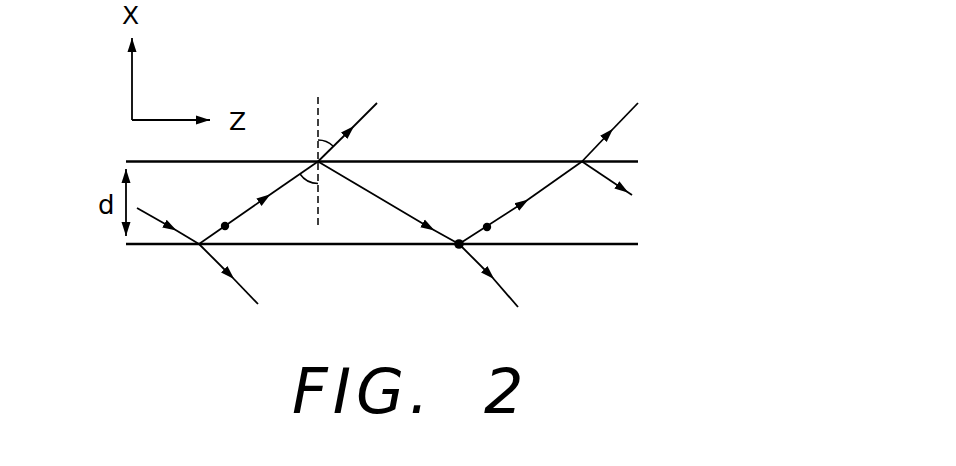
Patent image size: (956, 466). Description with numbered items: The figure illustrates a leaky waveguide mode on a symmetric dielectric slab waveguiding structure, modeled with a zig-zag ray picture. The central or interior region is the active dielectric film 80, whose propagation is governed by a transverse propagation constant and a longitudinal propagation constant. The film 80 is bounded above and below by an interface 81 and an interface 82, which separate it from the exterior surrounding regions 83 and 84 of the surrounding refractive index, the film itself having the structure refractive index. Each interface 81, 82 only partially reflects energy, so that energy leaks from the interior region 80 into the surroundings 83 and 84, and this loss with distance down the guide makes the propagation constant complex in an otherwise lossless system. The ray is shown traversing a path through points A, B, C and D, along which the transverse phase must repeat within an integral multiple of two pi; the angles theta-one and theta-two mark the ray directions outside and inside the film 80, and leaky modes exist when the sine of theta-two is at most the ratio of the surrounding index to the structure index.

The active dielectric film 80 is at (382, 186).
The interface 81 is at (455, 160).
The interface 82 is at (365, 246).
The surrounding region 83 is at (478, 159).
The surrounding region 84 is at (367, 260).